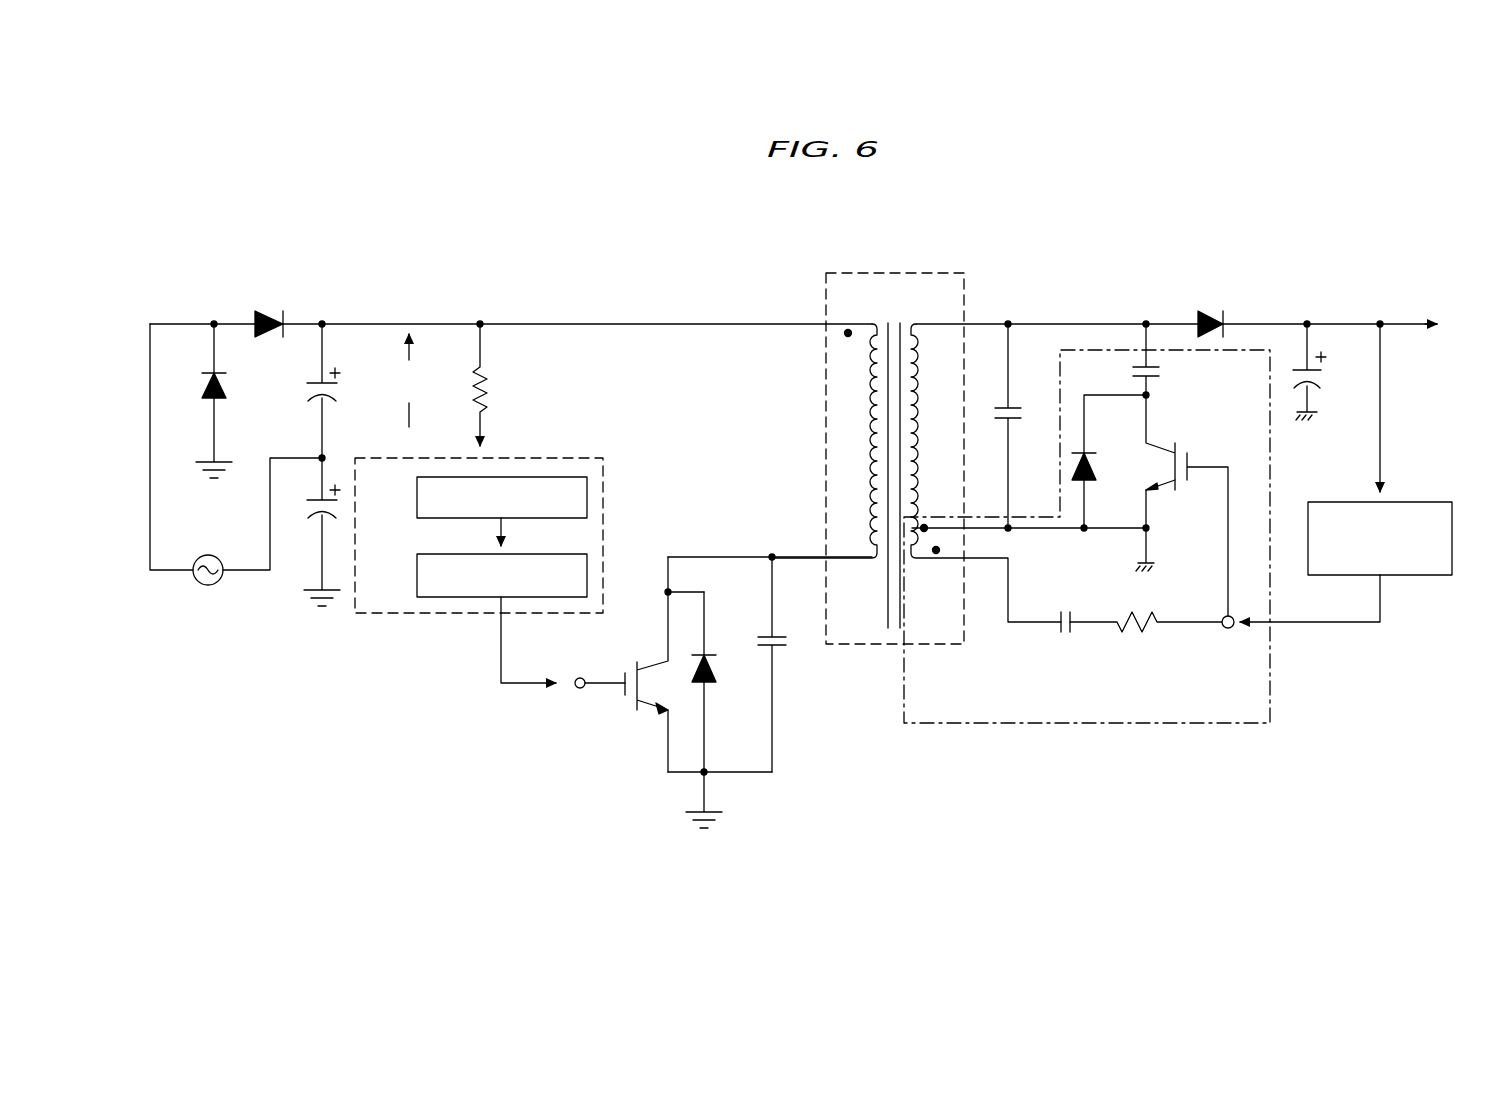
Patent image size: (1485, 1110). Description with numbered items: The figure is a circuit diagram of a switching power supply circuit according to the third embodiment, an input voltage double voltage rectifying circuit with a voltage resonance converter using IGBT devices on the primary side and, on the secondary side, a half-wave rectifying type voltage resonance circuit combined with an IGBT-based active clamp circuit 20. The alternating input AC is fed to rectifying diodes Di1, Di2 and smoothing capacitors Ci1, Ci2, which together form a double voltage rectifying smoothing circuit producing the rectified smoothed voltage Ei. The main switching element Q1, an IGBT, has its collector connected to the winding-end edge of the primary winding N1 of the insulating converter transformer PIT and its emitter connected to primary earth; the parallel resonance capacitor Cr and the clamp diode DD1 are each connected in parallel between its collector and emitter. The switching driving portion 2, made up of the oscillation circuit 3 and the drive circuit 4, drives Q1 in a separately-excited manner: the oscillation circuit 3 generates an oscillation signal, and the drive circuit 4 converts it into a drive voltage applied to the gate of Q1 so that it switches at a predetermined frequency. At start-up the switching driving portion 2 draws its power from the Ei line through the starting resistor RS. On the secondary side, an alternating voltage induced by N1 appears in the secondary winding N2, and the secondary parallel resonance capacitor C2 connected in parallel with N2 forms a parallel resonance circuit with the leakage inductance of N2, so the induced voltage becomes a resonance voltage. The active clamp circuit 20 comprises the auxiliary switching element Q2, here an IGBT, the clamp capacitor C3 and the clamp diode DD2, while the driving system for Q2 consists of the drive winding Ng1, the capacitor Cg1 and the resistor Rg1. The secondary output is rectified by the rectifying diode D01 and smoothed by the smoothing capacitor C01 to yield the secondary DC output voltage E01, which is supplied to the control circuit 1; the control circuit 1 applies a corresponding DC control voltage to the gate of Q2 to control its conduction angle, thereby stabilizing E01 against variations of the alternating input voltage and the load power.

The control circuit 1 is at (1420, 502).
The switching driving portion 2 is at (605, 527).
The oscillation circuit 3 is at (417, 497).
The drive circuit 4 is at (417, 574).
The active clamp circuit 20 is at (1270, 674).
The alternating input AC is at (208, 586).
The rectifying diode Di1 is at (229, 401).
The rectifying diode Di2 is at (269, 310).
The smoothing capacitor Ci1 is at (338, 391).
The smoothing capacitor Ci2 is at (312, 532).
The rectified smoothed voltage Ei is at (409, 380).
The starting resistor RS is at (498, 385).
The main switching element Q1 is at (634, 664).
The clamp diode DD1 is at (723, 710).
The parallel resonance capacitor Cr is at (781, 664).
The insulating converter transformer PIT is at (895, 458).
The primary winding N1 is at (856, 367).
The secondary winding N2 is at (934, 345).
The drive winding Ng1 is at (947, 540).
The secondary parallel resonance capacitor C2 is at (1020, 426).
The clamp capacitor C3 is at (1165, 359).
The clamp diode DD2 is at (1109, 461).
The auxiliary switching element Q2 is at (1182, 505).
The rectifying diode D01 is at (1210, 309).
The smoothing capacitor C01 is at (1333, 372).
The secondary DC output voltage E01 is at (1466, 324).
The capacitor Cg1 is at (1065, 639).
The resistor Rg1 is at (1146, 639).